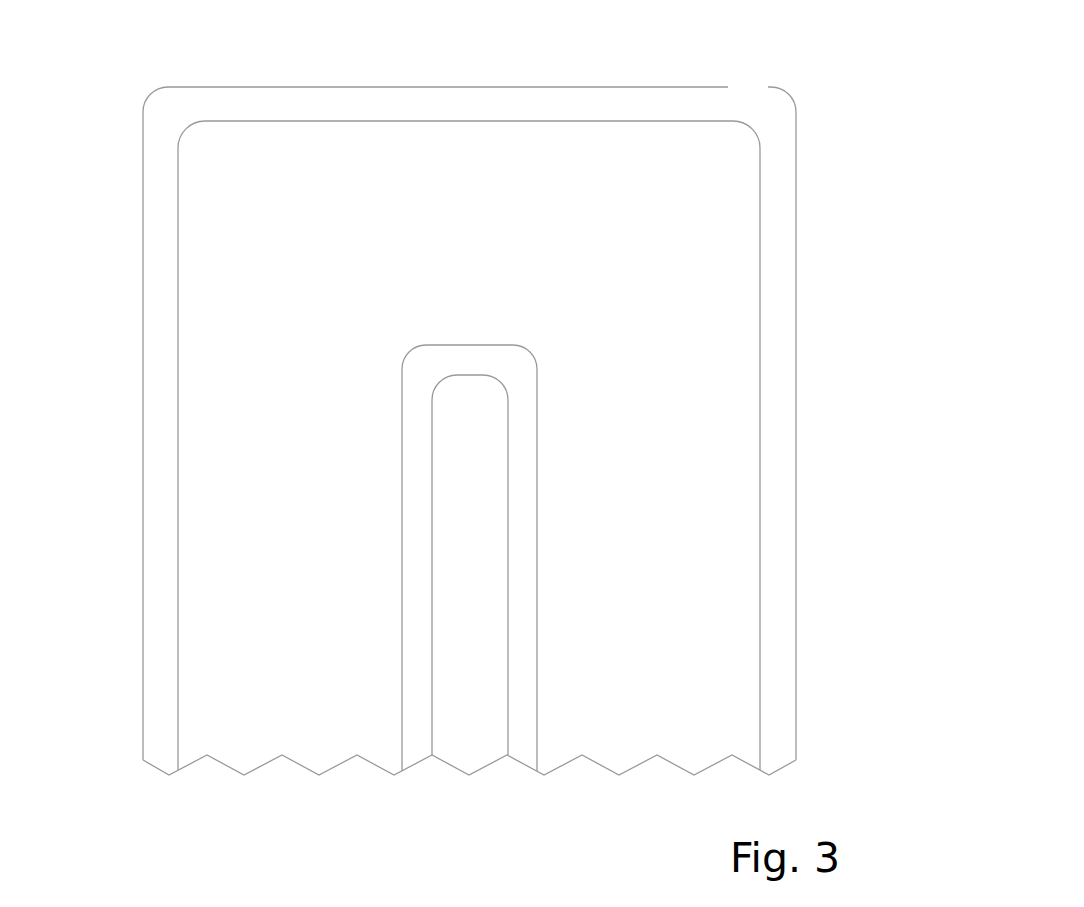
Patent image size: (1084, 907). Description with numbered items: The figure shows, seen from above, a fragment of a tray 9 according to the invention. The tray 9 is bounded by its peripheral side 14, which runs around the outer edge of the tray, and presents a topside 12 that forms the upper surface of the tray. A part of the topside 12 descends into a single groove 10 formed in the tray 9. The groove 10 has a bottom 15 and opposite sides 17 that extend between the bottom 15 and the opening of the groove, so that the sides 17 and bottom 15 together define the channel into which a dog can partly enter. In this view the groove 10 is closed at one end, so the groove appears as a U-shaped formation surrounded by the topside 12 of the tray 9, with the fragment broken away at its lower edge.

The tray 9 is at (665, 64).
The peripheral side 14 is at (457, 98).
The topside 12 is at (303, 311).
The groove 10 is at (478, 513).
The opposite sides 17 is at (418, 563).
The bottom 15 is at (483, 674).